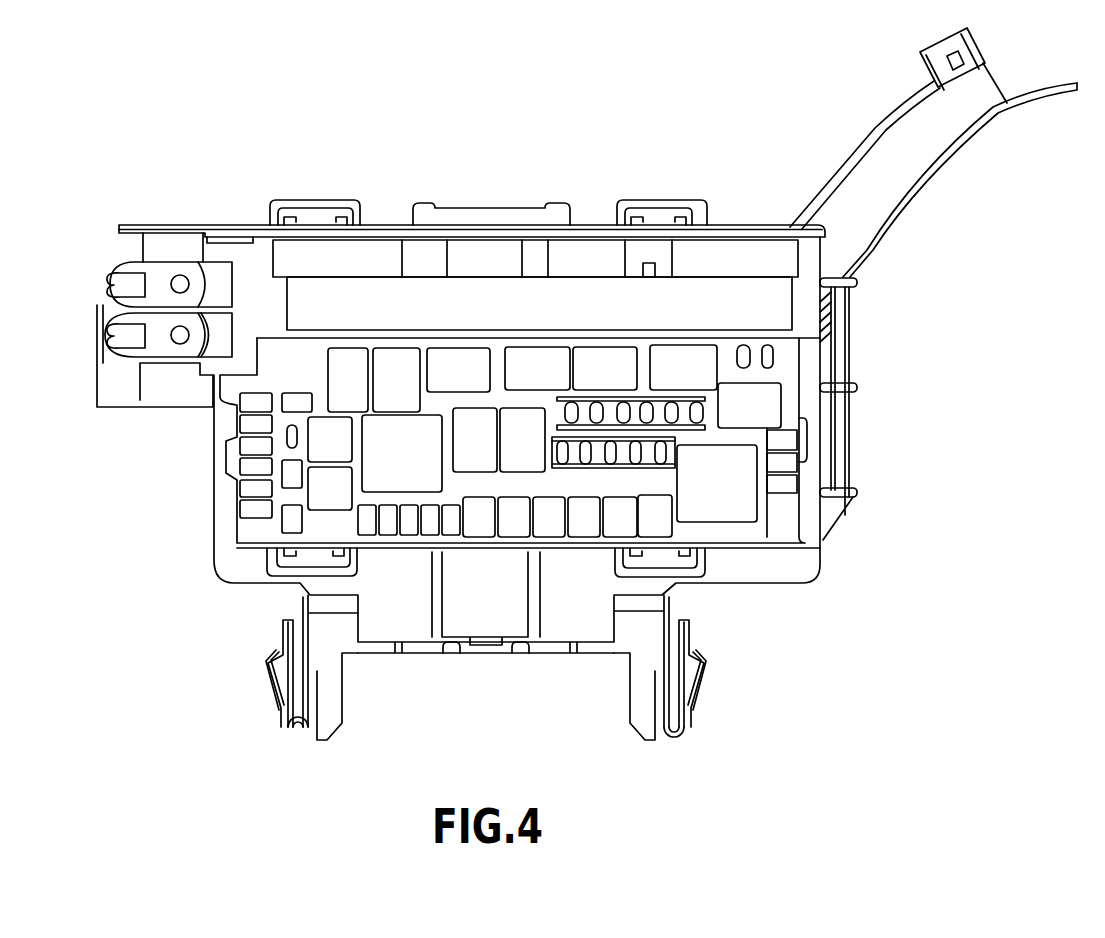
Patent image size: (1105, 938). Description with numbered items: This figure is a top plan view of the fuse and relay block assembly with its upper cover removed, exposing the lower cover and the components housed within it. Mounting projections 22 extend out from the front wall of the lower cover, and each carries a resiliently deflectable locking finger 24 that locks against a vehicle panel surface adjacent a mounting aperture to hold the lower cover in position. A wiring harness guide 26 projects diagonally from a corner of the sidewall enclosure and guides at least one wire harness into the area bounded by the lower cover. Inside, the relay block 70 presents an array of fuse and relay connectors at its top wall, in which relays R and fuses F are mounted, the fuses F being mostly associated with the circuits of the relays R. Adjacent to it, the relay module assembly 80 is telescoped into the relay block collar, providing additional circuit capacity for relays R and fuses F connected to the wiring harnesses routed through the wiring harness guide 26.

The mounting projection 22 is at (287, 732).
The resiliently deflectable locking finger 24 is at (268, 663).
The wiring harness guide 26 is at (917, 183).
The relay block 70 is at (808, 427).
The relay module assembly 80 is at (707, 302).
The relay R is at (723, 498).
The fuse F is at (260, 510).